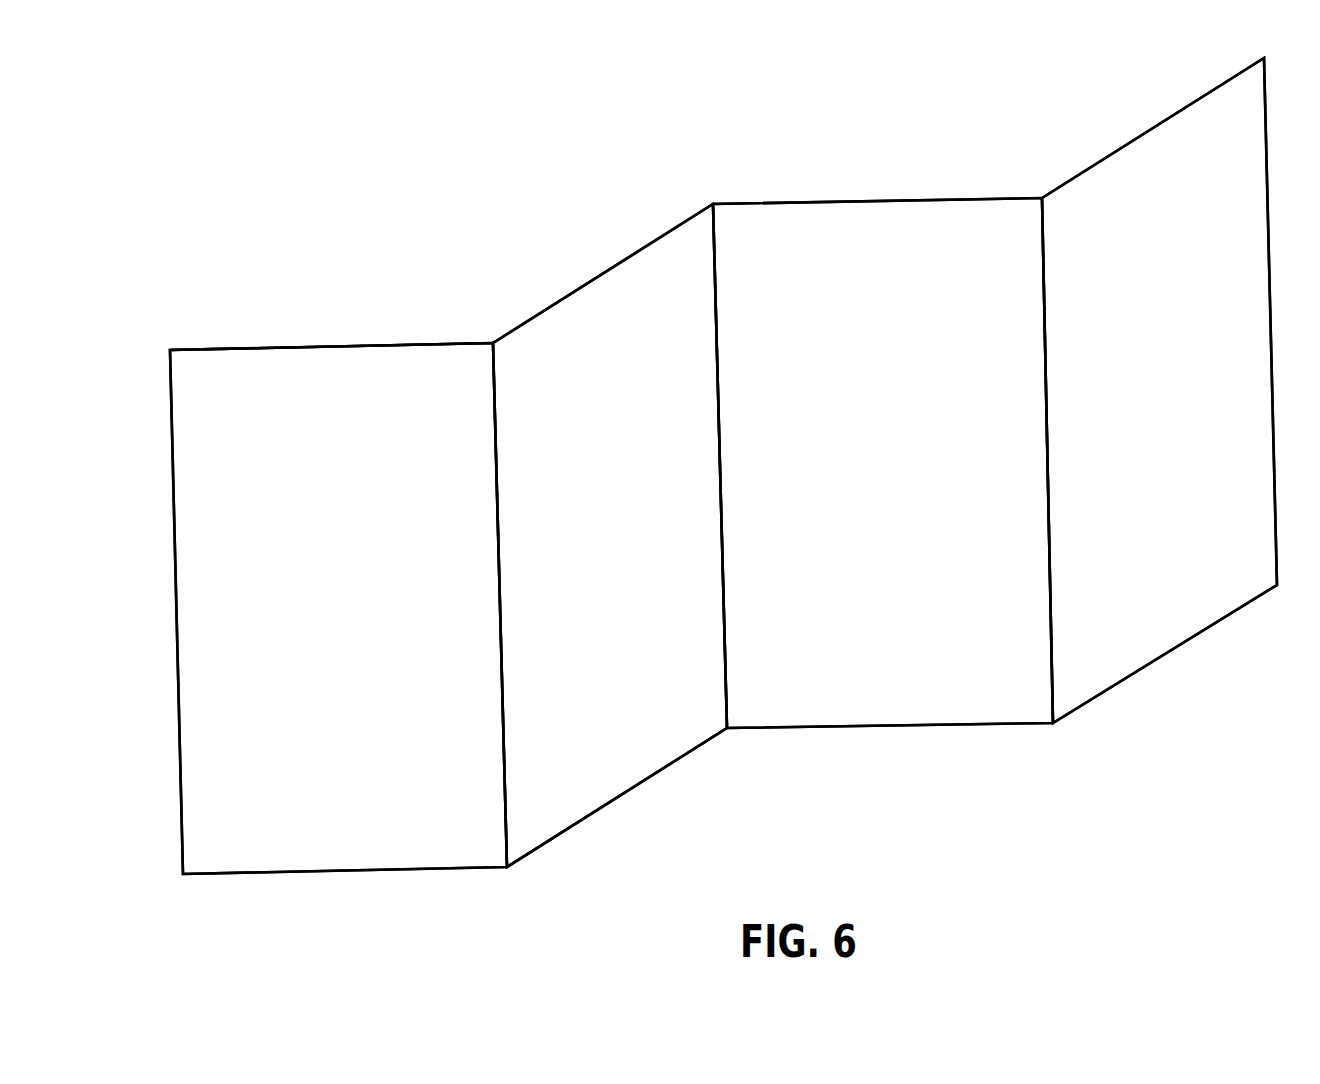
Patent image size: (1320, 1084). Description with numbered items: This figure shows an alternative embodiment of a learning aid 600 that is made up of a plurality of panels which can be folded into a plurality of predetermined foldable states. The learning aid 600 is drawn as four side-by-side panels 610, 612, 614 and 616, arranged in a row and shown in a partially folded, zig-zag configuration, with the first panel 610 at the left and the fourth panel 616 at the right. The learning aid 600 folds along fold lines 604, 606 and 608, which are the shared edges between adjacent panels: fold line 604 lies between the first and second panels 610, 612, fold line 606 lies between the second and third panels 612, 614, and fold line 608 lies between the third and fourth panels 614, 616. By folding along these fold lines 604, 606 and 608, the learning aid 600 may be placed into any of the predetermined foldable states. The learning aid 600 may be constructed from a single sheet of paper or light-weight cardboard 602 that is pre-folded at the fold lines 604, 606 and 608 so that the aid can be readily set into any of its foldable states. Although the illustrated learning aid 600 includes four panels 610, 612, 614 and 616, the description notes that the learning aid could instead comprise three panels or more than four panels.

The learning aid 600 is at (426, 221).
The single sheet of paper or light-weight cardboard 602 is at (330, 345).
The fold line 604 is at (491, 340).
The fold line 606 is at (713, 200).
The fold line 608 is at (1041, 196).
The panel 610 is at (352, 653).
The panel 612 is at (634, 581).
The panel 614 is at (907, 510).
The panel 616 is at (1180, 439).